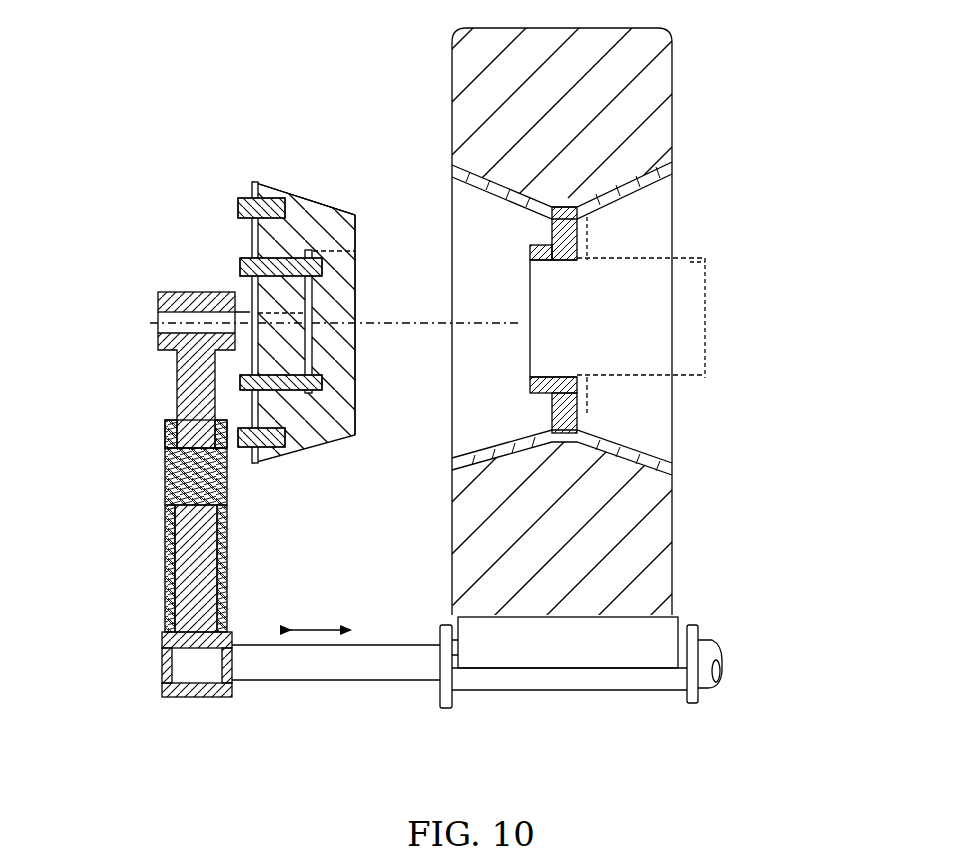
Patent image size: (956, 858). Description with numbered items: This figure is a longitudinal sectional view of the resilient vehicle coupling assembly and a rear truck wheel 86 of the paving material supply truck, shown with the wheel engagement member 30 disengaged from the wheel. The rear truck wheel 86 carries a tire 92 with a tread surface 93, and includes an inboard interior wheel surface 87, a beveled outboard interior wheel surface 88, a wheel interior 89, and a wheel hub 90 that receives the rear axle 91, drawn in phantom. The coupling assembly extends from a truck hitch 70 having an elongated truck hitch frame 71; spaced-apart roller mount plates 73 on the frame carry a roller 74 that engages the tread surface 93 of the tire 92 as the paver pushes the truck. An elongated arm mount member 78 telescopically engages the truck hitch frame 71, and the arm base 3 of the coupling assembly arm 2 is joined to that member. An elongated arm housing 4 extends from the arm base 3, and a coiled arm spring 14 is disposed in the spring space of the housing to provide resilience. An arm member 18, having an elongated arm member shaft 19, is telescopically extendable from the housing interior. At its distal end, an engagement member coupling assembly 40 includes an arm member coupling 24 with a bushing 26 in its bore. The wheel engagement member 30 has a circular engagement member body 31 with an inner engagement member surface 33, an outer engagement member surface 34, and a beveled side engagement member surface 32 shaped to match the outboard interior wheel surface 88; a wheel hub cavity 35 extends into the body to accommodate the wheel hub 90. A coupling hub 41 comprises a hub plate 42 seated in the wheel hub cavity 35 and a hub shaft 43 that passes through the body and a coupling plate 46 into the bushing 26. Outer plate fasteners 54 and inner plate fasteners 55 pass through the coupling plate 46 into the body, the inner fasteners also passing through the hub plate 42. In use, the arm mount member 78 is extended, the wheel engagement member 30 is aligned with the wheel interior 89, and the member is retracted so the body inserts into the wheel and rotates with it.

The coupling assembly arm 2 is at (150, 530).
The arm base 3 is at (162, 683).
The arm housing 4 is at (163, 560).
The coiled arm spring 14 is at (218, 560).
The arm member 18 is at (177, 362).
The arm member shaft 19 is at (185, 588).
The arm member coupling 24 is at (222, 292).
The bushing 26 is at (162, 300).
The wheel engagement member 30 is at (312, 465).
The engagement member body 31 is at (322, 215).
The side engagement member surface 32 is at (282, 186).
The inner engagement member surface 33 is at (356, 240).
The outer engagement member surface 34 is at (250, 188).
The wheel hub cavity 35 is at (335, 398).
The engagement member coupling assembly 40 is at (318, 297).
The coupling hub 41 is at (318, 353).
The hub plate 42 is at (312, 302).
The hub shaft 43 is at (158, 320).
The coupling plate 46 is at (254, 185).
The outer plate fasteners 54 is at (238, 208).
The inner plate fasteners 55 is at (240, 262).
The truck hitch 70 is at (718, 590).
The truck hitch frame 71 is at (615, 676).
The roller mount plates 73 is at (450, 702).
The roller 74 is at (557, 652).
The arm mount member 78 is at (325, 668).
The rear truck wheel 86 is at (632, 203).
The inboard interior wheel surface 87 is at (660, 432).
The outboard interior wheel surface 88 is at (462, 204).
The wheel interior 89 is at (498, 426).
The wheel hub 90 is at (612, 350).
The rear axle 91 is at (720, 378).
The tire 92 is at (500, 76).
The tread surface 93 is at (578, 620).